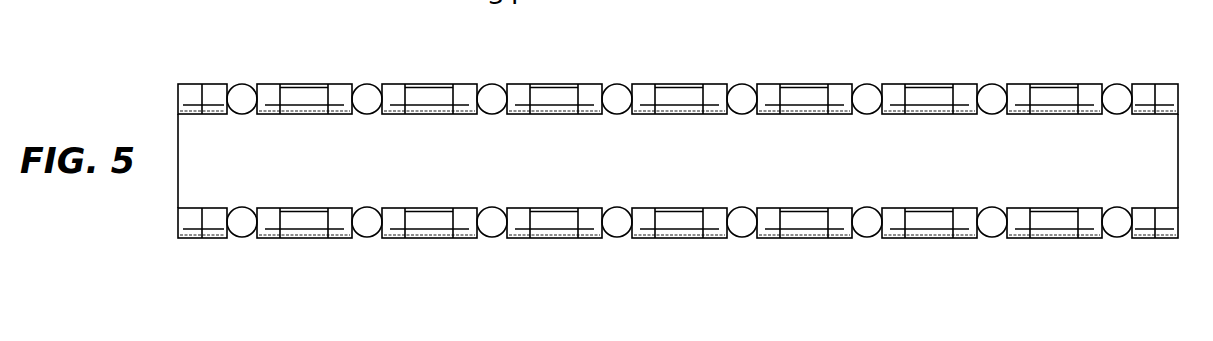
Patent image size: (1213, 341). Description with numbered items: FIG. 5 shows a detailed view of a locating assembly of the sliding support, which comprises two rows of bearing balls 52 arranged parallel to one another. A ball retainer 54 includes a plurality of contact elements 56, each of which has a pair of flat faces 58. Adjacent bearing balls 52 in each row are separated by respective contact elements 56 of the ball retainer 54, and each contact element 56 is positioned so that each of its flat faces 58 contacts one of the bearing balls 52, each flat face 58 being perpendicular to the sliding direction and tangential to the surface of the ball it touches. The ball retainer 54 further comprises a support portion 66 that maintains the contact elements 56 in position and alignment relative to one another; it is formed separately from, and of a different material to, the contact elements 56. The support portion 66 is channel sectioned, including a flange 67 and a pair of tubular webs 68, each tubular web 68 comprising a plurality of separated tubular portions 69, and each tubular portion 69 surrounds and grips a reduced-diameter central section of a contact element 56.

The bearing ball 52 is at (242, 237).
The ball retainer 54 is at (288, 65).
The contact element 56 is at (460, 238).
The flat face 58 is at (372, 84).
The support portion 66 is at (680, 168).
The flange 67 is at (553, 185).
The tubular web 68 is at (165, 227).
The tubular portion 69 is at (305, 238).